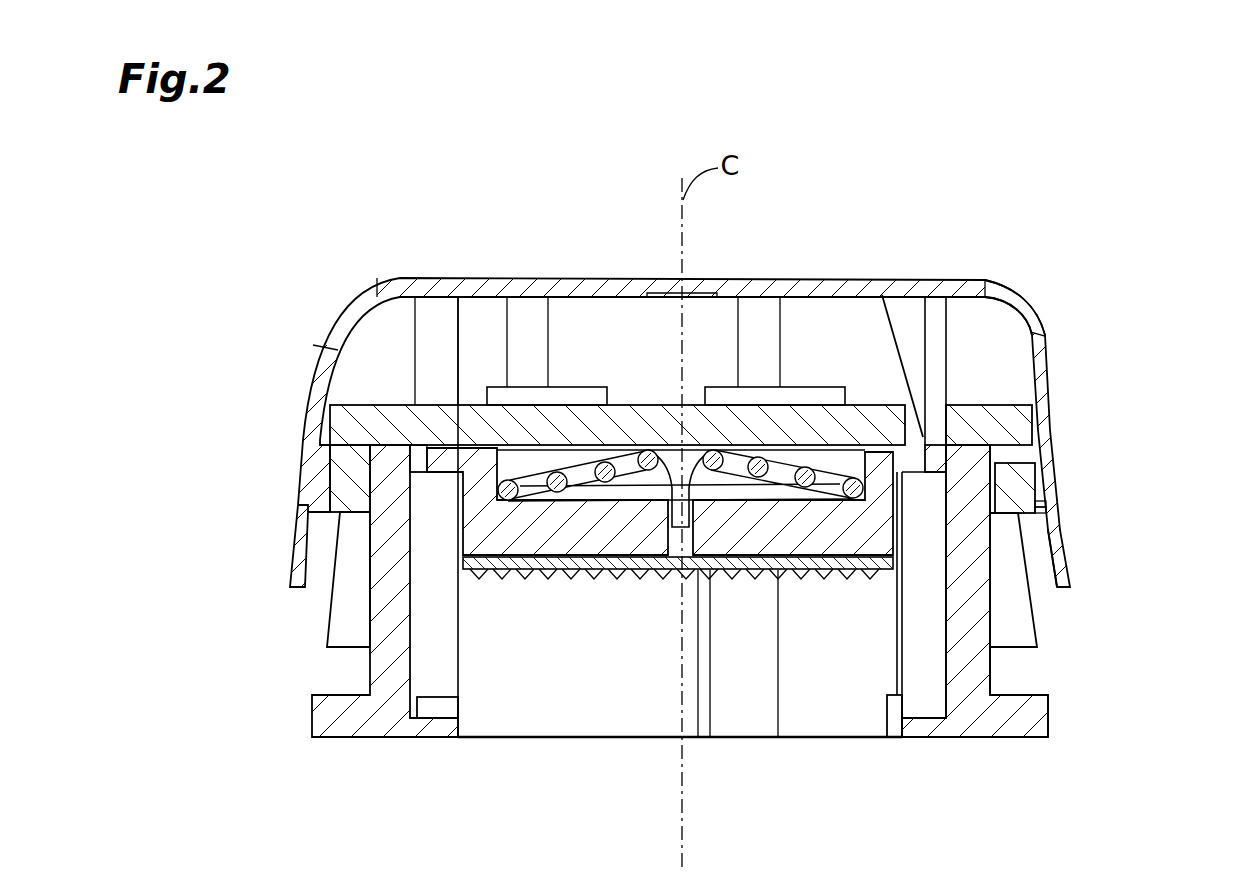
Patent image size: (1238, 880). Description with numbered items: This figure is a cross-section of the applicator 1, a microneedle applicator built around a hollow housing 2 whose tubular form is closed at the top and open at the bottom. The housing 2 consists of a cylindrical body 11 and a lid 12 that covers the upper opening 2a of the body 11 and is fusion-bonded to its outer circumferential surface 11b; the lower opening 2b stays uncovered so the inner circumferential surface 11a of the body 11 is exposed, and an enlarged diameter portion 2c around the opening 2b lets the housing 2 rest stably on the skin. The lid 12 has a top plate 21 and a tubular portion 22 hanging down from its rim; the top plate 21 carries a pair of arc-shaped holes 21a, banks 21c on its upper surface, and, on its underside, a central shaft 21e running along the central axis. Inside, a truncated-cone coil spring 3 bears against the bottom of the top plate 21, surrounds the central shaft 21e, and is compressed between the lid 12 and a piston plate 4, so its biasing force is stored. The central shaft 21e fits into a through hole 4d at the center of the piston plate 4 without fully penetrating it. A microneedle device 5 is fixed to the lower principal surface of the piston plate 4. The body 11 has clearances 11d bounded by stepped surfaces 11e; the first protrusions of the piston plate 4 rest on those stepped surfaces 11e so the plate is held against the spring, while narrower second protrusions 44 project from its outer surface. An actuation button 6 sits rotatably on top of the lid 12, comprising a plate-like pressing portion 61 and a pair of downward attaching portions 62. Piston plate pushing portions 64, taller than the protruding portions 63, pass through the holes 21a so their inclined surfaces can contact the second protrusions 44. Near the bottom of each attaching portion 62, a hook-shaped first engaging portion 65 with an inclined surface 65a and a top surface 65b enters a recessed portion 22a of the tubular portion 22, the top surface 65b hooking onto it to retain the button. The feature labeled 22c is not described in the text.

The applicator 1 is at (1093, 222).
The housing 2 is at (244, 655).
The opening 2a is at (565, 455).
The opening 2b is at (575, 740).
The enlarged diameter portion 2c is at (1050, 718).
The coil spring 3 is at (620, 465).
The piston plate 4 is at (745, 542).
The hole 4d is at (672, 567).
The microneedle device 5 is at (580, 575).
The actuation button 6 is at (1013, 166).
The pressing portion 61 is at (903, 290).
The attaching portion 62 is at (1048, 338).
The protruding portion 63 is at (755, 320).
The piston plate pushing portion 64 is at (878, 318).
The first engaging portion 65 is at (325, 520).
The inclined surface 65a is at (1048, 548).
The top surface 65b is at (1043, 500).
The body 11 is at (372, 677).
The inner circumferential surface 11a is at (897, 665).
The outer circumferential surface 11b is at (993, 665).
The clearance 11d is at (955, 458).
The stepped surface 11e is at (927, 445).
The lid 12 is at (335, 637).
The top plate 21 is at (383, 422).
The hole 21a is at (422, 443).
The bank 21c is at (713, 320).
The central shaft 21e is at (695, 575).
The tubular portion 22 is at (343, 577).
The recessed portion 22a is at (1004, 516).
The cover step 22c is at (320, 500).
The second protrusion 44 is at (923, 455).